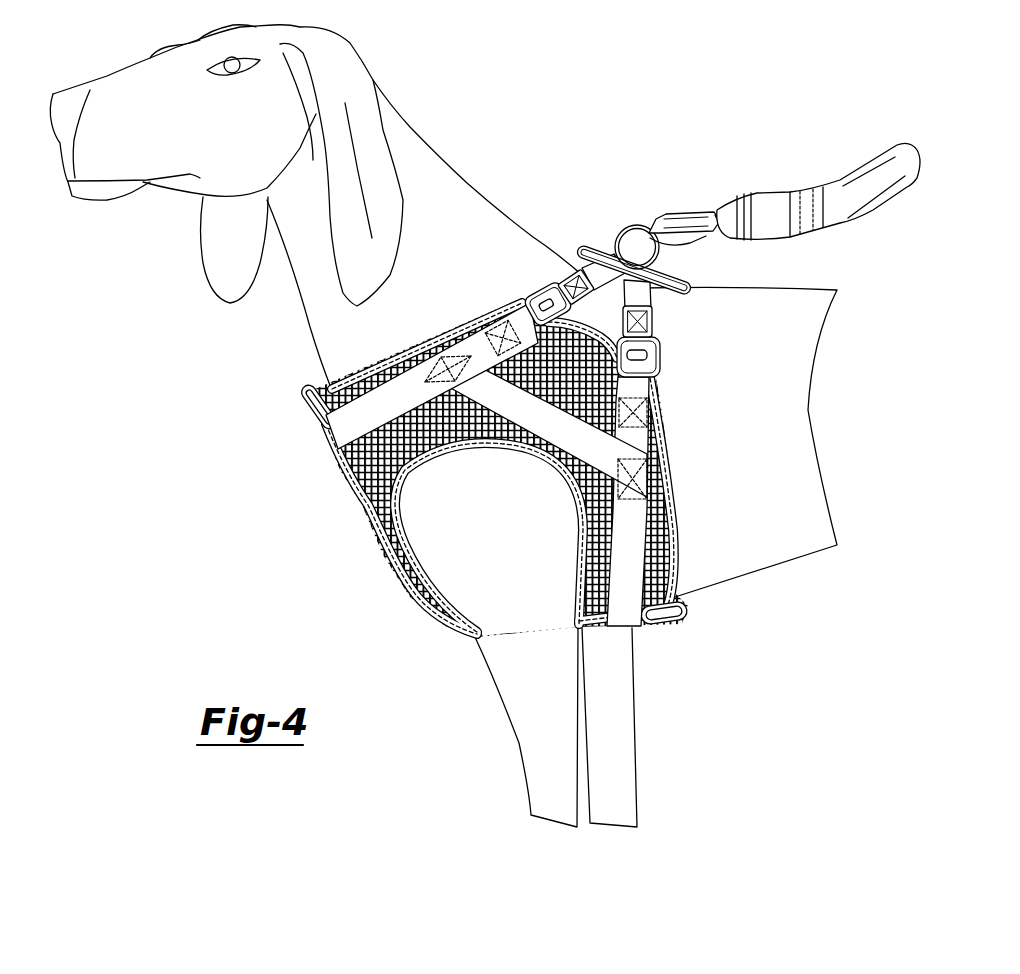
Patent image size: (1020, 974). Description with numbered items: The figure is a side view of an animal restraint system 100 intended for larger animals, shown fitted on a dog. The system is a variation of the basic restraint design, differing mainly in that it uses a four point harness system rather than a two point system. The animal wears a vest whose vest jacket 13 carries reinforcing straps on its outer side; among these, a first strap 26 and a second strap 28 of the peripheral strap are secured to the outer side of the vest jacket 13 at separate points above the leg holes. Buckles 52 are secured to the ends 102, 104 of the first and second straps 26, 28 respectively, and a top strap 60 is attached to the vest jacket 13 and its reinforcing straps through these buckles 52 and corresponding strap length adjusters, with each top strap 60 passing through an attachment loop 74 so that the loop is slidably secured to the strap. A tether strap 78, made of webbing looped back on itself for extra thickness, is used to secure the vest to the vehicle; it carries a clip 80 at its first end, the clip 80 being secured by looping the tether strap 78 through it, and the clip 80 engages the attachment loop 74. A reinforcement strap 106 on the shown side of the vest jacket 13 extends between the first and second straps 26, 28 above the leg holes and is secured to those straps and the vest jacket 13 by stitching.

The animal restraint system 100 is at (703, 118).
The vest jacket 13 is at (370, 494).
The first strap 26 is at (462, 322).
The second strap 28 is at (638, 448).
The buckle 52 is at (530, 292).
The top strap 60 is at (583, 270).
The attachment loop 74 is at (622, 230).
The tether strap 78 is at (768, 196).
The clip 80 is at (668, 216).
The end of first strap 102 is at (650, 390).
The end of second strap 104 is at (500, 318).
The reinforcement strap 106 is at (623, 453).